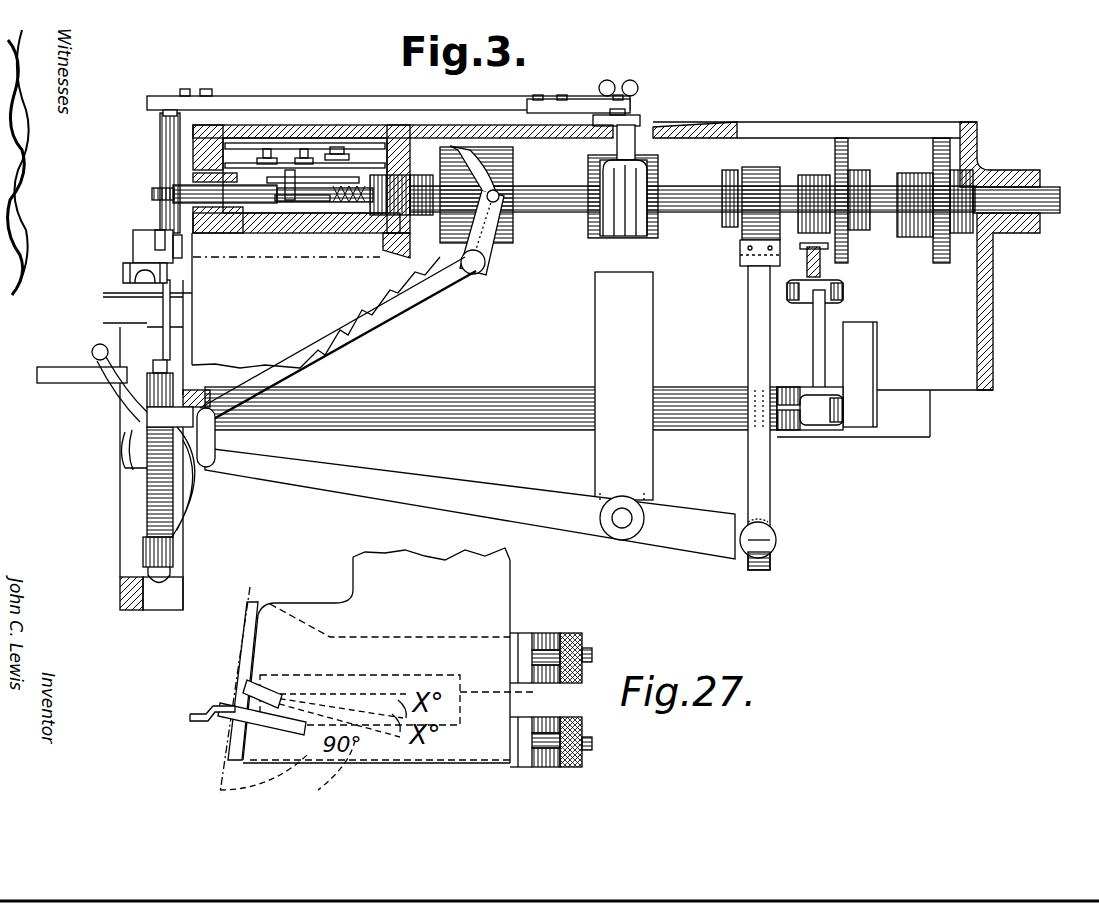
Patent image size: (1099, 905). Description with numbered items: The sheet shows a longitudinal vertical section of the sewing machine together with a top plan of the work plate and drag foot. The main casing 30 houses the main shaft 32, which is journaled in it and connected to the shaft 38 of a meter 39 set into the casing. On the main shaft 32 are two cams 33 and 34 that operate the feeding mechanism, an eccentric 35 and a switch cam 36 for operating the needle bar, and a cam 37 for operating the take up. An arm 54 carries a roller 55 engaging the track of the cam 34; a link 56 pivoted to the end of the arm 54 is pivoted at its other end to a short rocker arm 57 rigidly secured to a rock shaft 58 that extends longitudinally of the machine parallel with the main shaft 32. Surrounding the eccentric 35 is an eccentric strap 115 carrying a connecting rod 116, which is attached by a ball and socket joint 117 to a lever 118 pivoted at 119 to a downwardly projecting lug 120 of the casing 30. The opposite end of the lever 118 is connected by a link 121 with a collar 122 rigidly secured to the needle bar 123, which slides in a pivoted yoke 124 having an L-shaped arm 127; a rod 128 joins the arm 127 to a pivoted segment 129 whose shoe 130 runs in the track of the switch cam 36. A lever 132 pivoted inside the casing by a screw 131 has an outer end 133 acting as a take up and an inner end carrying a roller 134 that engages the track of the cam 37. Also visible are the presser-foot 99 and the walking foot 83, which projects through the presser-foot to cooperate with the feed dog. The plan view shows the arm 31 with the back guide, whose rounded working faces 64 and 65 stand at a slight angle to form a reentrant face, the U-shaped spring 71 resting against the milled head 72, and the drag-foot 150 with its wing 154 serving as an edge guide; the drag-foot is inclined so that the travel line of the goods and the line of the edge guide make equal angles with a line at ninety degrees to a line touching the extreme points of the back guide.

In FIG. 3, the main casing 30 is at (571, 366).
In FIG. 27, the arm 31 is at (513, 583).
In FIG. 3, the main shaft 32 is at (1045, 206).
In FIG. 3, the cam 33 is at (940, 138).
In FIG. 3, the cam 34 is at (840, 138).
In FIG. 3, the eccentric 35 is at (733, 208).
In FIG. 3, the switch cam 36 is at (655, 228).
In FIG. 3, the cam 37 is at (514, 163).
In FIG. 3, the meter shaft 38 is at (152, 195).
In FIG. 3, the meter 39 is at (243, 134).
In FIG. 3, the arm 54 is at (805, 270).
In FIG. 3, the roller 55 is at (830, 250).
In FIG. 3, the link 56 is at (813, 350).
In FIG. 3, the rocker arm 57 is at (802, 407).
In FIG. 3, the rock shaft 58 is at (440, 405).
In FIG. 27, the working face 64 is at (248, 628).
In FIG. 27, the working face 65 is at (228, 743).
In FIG. 27, the U-shaped spring 71 is at (553, 718).
In FIG. 27, the milled head 72 is at (580, 635).
In FIG. 3, the walking foot 83 is at (147, 283).
In FIG. 3, the presser-foot 99 is at (143, 247).
In FIG. 3, the eccentric strap 115 is at (765, 167).
In FIG. 3, the connecting rod 116 is at (755, 326).
In FIG. 3, the ball and socket joint 117 is at (778, 540).
In FIG. 3, the lever 118 is at (470, 503).
In FIG. 3, the pivot 119 is at (622, 540).
In FIG. 3, the lug 120 is at (624, 386).
In FIG. 3, the link 121 is at (215, 437).
In FIG. 3, the collar 122 is at (160, 417).
In FIG. 3, the needle bar 123 is at (157, 502).
In FIG. 3, the yoke 124 is at (187, 507).
In FIG. 3, the L-shaped arm 127 is at (162, 152).
In FIG. 3, the rod 128 is at (355, 106).
In FIG. 3, the pivoted segment 129 is at (640, 118).
In FIG. 3, the shoe 130 is at (648, 160).
In FIG. 3, the screw 131 is at (473, 276).
In FIG. 3, the lever 132 is at (388, 312).
In FIG. 3, the outer end 133 is at (95, 348).
In FIG. 3, the roller 134 is at (500, 205).
In FIG. 27, the drag-foot 150 is at (290, 722).
In FIG. 27, the wing 154 is at (275, 685).